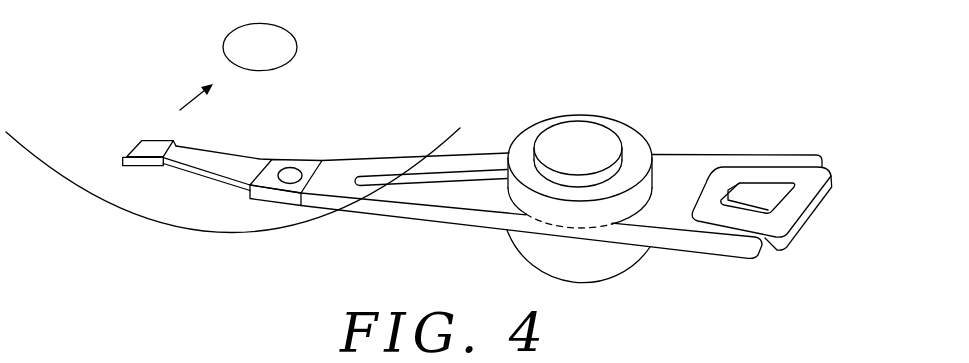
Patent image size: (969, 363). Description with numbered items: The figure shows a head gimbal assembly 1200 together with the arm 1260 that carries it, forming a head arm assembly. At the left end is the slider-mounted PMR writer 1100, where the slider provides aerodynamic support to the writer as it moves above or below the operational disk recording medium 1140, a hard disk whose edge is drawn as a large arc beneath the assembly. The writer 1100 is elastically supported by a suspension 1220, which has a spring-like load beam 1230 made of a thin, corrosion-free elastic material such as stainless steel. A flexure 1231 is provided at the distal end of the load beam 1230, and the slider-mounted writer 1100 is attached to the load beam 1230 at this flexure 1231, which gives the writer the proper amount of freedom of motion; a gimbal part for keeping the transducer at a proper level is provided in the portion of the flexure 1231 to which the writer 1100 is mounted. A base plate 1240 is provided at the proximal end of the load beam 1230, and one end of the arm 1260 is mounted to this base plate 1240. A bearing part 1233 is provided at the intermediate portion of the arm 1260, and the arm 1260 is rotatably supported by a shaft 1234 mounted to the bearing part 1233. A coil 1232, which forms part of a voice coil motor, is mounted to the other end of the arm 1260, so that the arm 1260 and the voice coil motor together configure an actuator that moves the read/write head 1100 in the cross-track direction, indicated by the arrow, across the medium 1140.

The slider-mounted PMR writer 1100 is at (145, 140).
The disk recording medium 1140 is at (130, 250).
The head gimbal assembly 1200 is at (268, 268).
The suspension 1220 is at (438, 113).
The load beam 1230 is at (292, 98).
The flexure 1231 is at (124, 158).
The coil 1232 is at (841, 247).
The bearing part 1233 is at (530, 135).
The shaft 1234 is at (593, 86).
The base plate 1240 is at (348, 131).
The arm 1260 is at (387, 250).